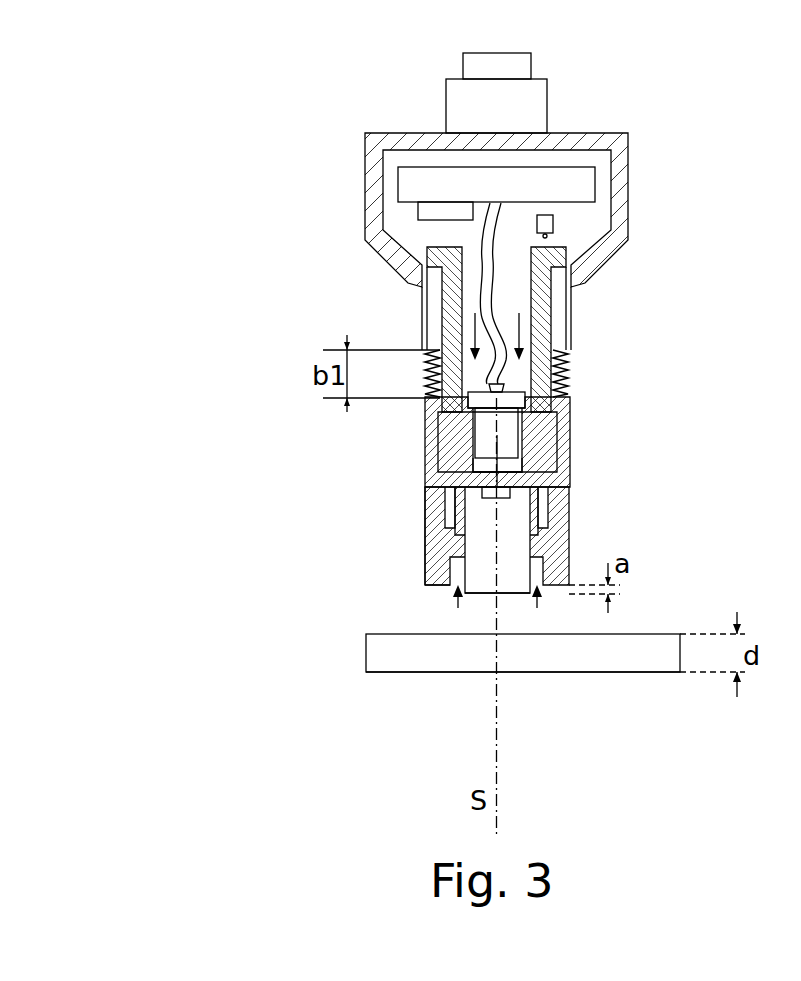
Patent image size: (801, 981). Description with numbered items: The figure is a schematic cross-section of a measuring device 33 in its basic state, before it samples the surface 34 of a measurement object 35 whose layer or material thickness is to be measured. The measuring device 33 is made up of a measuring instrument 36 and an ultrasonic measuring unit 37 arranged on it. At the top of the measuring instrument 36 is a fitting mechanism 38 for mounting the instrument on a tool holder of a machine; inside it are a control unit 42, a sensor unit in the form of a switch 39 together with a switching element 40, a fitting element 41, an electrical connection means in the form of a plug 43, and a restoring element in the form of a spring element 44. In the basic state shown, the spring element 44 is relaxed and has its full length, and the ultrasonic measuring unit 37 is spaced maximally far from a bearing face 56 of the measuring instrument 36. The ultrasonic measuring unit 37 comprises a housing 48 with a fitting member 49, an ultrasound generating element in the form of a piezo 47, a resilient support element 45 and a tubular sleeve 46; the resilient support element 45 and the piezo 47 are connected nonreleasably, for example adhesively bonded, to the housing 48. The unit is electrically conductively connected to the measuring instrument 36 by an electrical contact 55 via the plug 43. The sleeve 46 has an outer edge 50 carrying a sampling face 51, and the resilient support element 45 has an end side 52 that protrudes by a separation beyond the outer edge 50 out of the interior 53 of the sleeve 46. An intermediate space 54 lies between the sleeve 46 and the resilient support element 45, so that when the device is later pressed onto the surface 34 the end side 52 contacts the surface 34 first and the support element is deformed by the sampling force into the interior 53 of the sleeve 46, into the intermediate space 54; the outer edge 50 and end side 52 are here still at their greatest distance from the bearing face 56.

The measuring device 33 is at (268, 574).
The surface 34 is at (652, 633).
The measurement object 35 is at (478, 663).
The measuring instrument 36 is at (267, 209).
The ultrasonic measuring unit 37 is at (359, 501).
The fitting mechanism 38 is at (436, 79).
The switch 39 is at (557, 225).
The switching element 40 is at (548, 315).
The fitting element 41 is at (566, 416).
The control unit 42 is at (550, 180).
The plug 43 is at (568, 383).
The spring element 44 is at (425, 367).
The resilient support element 45 is at (522, 512).
The tubular sleeve 46 is at (569, 545).
The piezo 47 is at (548, 454).
The housing 48 is at (482, 491).
The fitting member 49 is at (505, 478).
The outer edge 50 is at (425, 567).
The sampling face 51 is at (446, 586).
The end side 52 is at (503, 595).
The interior 53 is at (458, 608).
The intermediate space 54 is at (537, 608).
The electrical contact 55 is at (493, 437).
The bearing face 56 is at (407, 288).